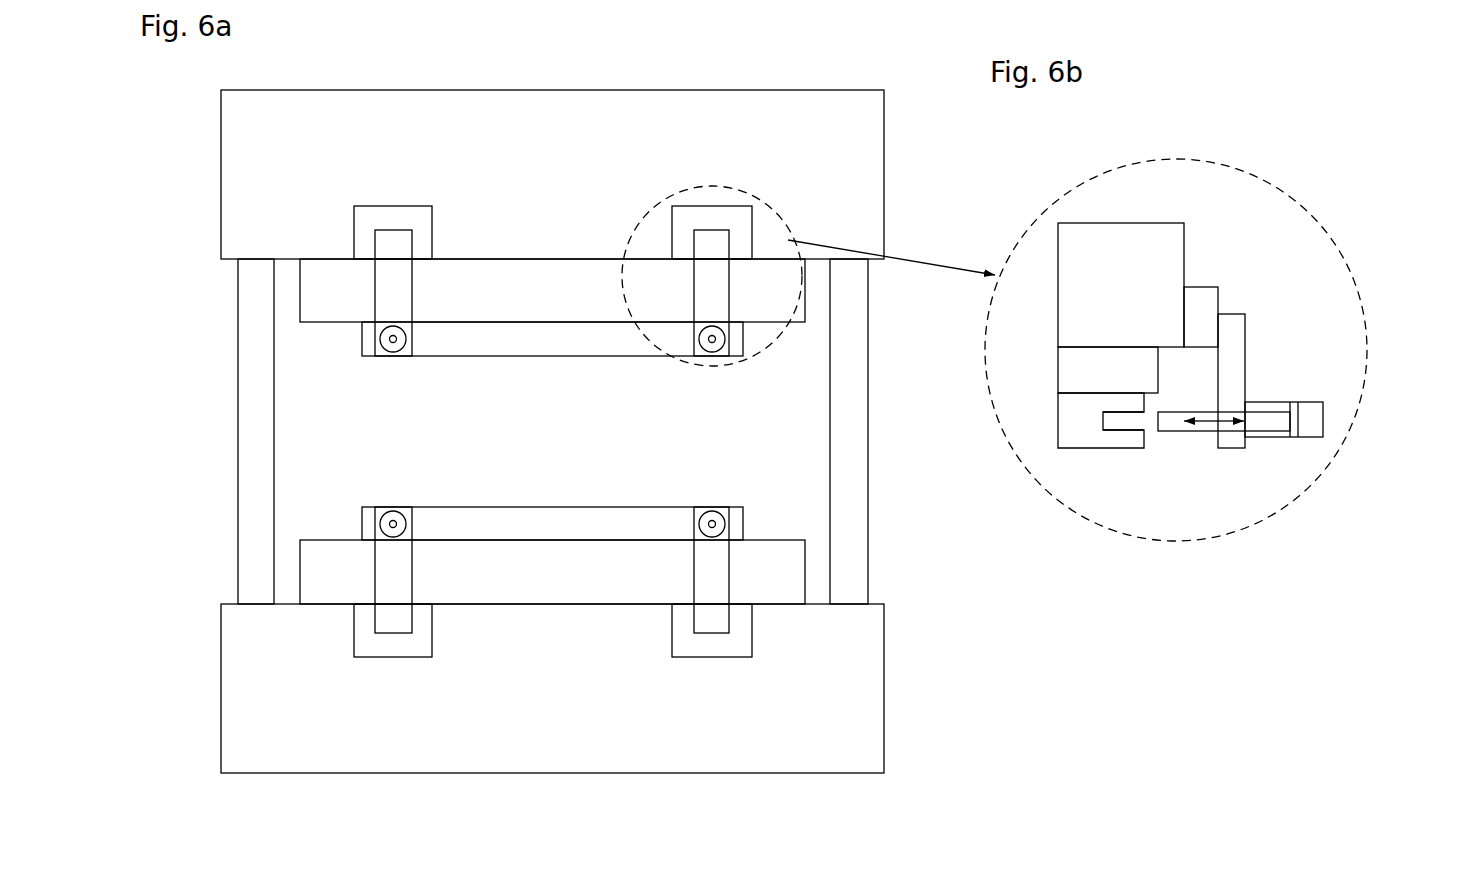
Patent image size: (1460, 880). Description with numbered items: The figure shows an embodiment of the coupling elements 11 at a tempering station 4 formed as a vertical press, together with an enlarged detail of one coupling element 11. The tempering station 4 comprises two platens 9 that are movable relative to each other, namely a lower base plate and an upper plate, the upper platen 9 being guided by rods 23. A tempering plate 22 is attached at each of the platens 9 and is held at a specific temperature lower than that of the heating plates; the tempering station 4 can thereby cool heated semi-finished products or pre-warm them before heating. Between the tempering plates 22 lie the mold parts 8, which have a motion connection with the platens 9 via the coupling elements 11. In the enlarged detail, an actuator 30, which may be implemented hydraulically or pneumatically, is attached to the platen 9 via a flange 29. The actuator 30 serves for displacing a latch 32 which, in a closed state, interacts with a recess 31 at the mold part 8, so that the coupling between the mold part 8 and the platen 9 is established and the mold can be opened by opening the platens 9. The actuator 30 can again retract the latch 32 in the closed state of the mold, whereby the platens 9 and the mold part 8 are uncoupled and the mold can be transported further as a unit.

In FIG. 6B, the tempering station 4 is at (1173, 705).
In FIG. 6A, the mold part 8 is at (562, 354).
In FIG. 6B, the mold part 8 is at (1080, 433).
In FIG. 6A, the platen 9 is at (311, 189).
In FIG. 6B, the platen 9 is at (1130, 297).
In FIG. 6A, the coupling element 11 is at (658, 213).
In FIG. 6B, the coupling element 11 is at (1232, 210).
In FIG. 6A, the tempering plate 22 is at (572, 306).
In FIG. 6B, the tempering plate 22 is at (1100, 370).
In FIG. 6A, the rod 23 is at (260, 461).
In FIG. 6B, the flange 29 is at (1231, 373).
In FIG. 6B, the actuator 30 is at (1267, 456).
In FIG. 6B, the recess 31 is at (1127, 438).
In FIG. 6B, the latch 32 is at (1175, 423).